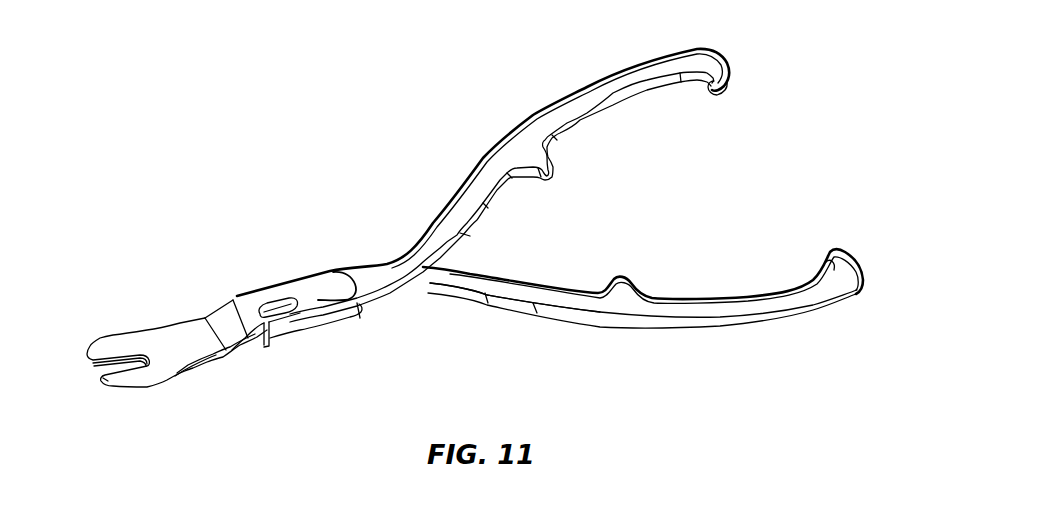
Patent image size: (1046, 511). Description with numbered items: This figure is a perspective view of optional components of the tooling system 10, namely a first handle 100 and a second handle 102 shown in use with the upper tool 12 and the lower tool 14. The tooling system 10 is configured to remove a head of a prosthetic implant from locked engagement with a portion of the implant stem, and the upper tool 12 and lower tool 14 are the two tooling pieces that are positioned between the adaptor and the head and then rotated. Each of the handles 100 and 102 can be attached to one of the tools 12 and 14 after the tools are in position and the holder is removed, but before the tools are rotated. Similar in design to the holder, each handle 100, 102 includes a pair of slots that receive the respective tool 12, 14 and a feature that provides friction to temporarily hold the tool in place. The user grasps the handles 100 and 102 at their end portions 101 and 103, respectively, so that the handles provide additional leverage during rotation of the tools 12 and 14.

The tooling system 10 is at (236, 122).
The upper tool 12 is at (148, 335).
The lower tool 14 is at (272, 352).
The first handle 100 is at (371, 278).
The end portion 101 is at (611, 95).
The second handle 102 is at (462, 290).
The end portion 103 is at (775, 300).